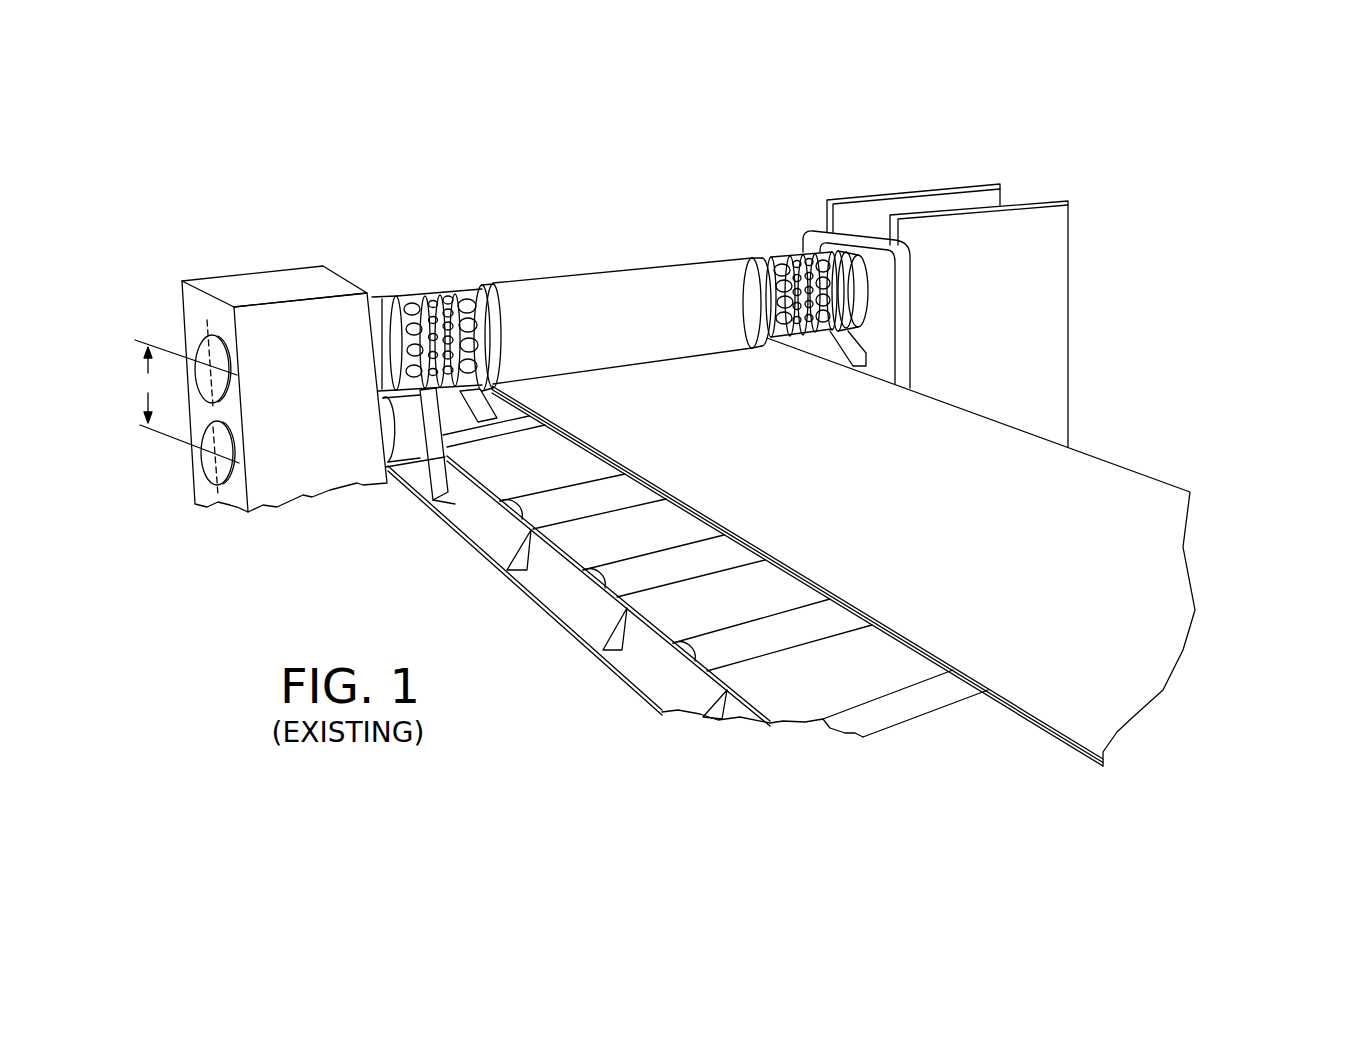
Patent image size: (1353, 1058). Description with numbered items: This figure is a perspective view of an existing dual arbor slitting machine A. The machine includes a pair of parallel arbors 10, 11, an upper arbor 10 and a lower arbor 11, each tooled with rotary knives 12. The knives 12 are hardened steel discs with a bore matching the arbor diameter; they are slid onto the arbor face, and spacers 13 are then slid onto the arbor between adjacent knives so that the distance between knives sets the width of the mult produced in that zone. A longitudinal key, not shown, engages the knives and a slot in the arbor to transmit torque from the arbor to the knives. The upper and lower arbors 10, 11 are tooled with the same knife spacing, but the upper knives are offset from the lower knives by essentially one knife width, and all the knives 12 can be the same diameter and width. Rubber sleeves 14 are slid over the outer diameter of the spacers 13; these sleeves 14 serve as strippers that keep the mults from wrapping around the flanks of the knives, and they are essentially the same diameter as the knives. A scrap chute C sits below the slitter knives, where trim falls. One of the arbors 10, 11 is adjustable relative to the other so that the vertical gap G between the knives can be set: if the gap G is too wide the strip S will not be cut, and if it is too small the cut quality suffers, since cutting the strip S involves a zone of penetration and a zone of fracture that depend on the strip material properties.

The upper arbor 10 is at (377, 333).
The lower arbor 11 is at (382, 418).
The rotary knives 12 is at (472, 287).
The spacers 13 is at (577, 282).
The rubber sleeves 14 is at (700, 270).
The slitting machine A is at (360, 508).
The scrap chute C is at (482, 413).
The gap G is at (187, 401).
The strip S is at (1173, 575).